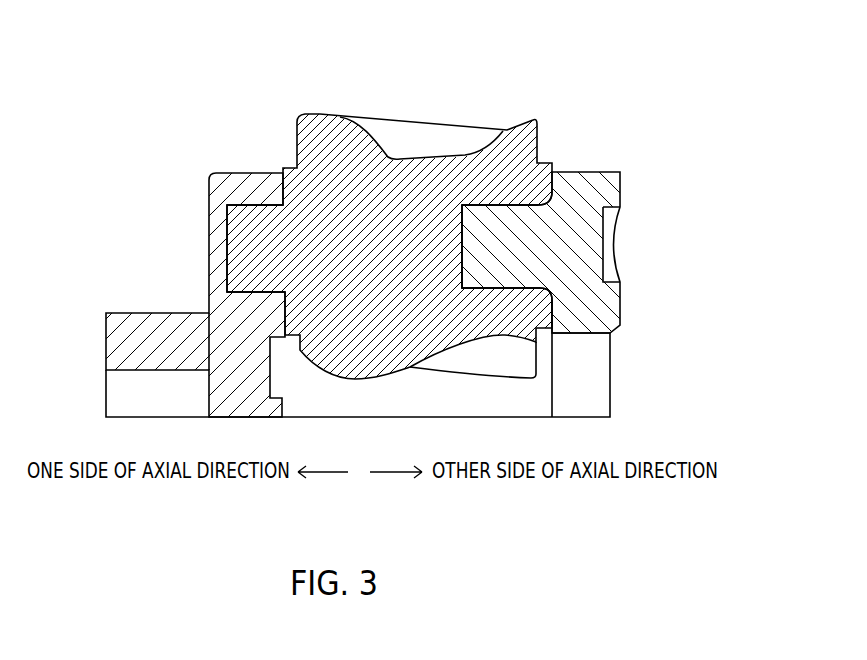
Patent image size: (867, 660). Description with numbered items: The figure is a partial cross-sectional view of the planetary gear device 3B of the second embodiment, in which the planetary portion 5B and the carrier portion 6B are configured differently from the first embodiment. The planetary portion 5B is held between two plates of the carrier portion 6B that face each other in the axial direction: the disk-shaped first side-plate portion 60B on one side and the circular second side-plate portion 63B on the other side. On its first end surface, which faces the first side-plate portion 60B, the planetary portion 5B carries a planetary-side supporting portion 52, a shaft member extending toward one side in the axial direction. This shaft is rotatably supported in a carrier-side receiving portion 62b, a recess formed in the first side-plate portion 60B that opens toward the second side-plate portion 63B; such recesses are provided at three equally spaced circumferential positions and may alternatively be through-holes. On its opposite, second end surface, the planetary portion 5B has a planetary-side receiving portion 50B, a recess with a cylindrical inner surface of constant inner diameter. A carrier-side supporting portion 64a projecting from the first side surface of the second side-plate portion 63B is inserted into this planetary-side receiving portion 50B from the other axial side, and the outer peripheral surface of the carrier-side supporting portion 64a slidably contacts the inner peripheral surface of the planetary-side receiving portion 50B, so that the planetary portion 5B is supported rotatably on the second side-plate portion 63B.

The planetary gear device 3B is at (106, 296).
The planetary portion 5B is at (447, 106).
The carrier portion 6B is at (375, 237).
The planetary-side receiving portion 50B is at (569, 195).
The planetary-side supporting portion 52 is at (255, 272).
The first side-plate portion 60B is at (215, 193).
The carrier-side receiving portion 62b is at (232, 212).
The second side-plate portion 63B is at (573, 203).
The carrier-side supporting portion 64a is at (512, 220).